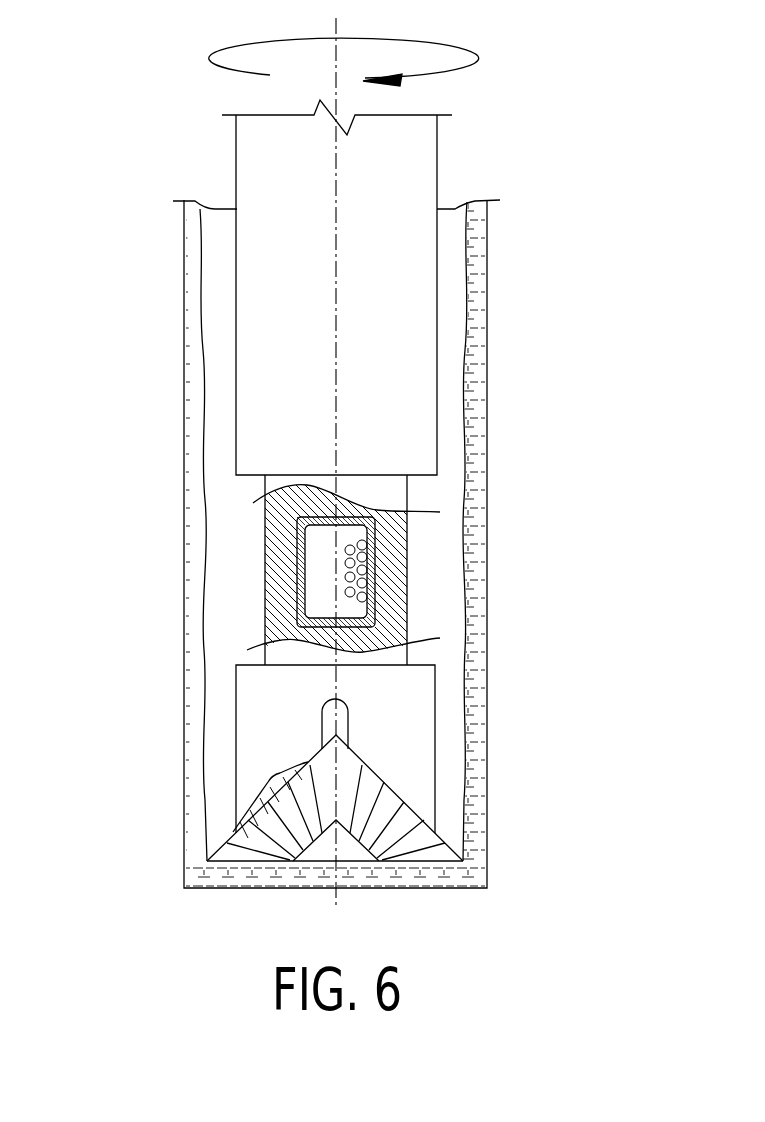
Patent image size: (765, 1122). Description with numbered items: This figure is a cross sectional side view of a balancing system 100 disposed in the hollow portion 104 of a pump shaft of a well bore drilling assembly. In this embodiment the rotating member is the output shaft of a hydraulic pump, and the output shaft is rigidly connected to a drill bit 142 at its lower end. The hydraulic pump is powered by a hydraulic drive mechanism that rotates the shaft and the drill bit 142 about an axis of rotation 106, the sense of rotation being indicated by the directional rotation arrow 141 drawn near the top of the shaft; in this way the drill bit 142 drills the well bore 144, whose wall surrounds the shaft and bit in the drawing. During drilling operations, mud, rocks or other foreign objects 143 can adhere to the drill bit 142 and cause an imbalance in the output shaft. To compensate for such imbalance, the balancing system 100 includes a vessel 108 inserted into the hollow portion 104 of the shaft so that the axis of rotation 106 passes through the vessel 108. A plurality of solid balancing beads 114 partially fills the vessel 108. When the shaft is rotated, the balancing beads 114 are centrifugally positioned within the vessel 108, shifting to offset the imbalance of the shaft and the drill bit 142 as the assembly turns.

The balancing system 100 is at (295, 571).
The hollow portion 104 is at (310, 502).
The axis of rotation 106 is at (338, 70).
The vessel 108 is at (295, 543).
The balancing beads 114 is at (352, 583).
The directional rotation arrow 141 is at (462, 70).
The drill bit 142 is at (435, 732).
The foreign objects 143 is at (263, 790).
The well bore 144 is at (205, 676).